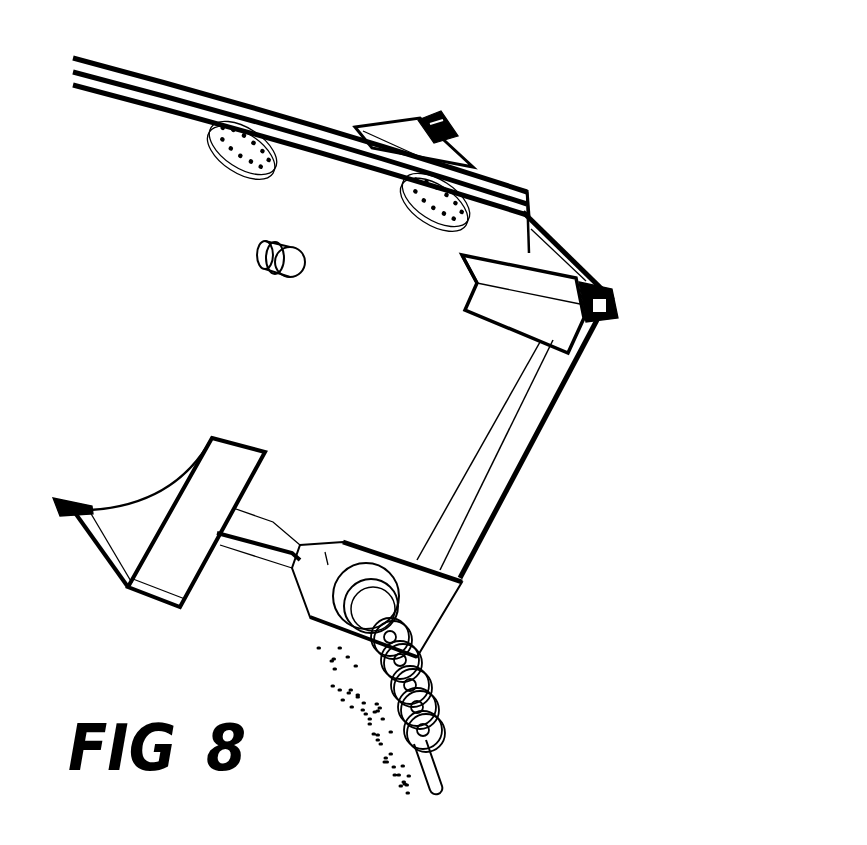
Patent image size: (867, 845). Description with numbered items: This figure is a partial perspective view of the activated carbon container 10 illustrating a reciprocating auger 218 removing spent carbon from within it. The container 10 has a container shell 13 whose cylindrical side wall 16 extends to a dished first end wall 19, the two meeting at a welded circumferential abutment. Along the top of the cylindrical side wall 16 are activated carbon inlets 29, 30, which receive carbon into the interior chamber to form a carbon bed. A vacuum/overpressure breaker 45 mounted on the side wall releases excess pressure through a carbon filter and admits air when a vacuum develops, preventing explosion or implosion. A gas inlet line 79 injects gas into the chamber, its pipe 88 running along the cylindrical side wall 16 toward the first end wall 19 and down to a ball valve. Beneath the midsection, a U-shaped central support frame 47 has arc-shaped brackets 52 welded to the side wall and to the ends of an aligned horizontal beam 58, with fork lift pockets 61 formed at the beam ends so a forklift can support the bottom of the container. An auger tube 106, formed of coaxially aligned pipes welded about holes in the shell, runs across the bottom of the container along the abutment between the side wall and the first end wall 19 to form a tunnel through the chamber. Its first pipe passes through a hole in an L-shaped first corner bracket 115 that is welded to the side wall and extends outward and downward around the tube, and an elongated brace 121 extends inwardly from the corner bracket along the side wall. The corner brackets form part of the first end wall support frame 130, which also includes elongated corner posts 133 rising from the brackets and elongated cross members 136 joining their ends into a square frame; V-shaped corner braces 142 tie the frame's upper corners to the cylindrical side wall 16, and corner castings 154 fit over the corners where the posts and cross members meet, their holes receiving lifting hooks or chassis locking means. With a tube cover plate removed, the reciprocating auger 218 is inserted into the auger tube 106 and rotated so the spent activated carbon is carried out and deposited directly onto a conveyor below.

The container 10 is at (740, 285).
The container shell 13 is at (238, 98).
The cylindrical side wall 16 is at (212, 343).
The first end wall 19 is at (528, 215).
The activated carbon inlet 29 is at (270, 174).
The activated carbon inlet 30 is at (437, 222).
The vacuum/overpressure breaker 45 is at (297, 276).
The first U-shaped central support frame 47 is at (207, 572).
The arc-shaped bracket 52 is at (212, 538).
The horizontal beam 58 is at (106, 566).
The fork lift pocket 61 is at (160, 607).
The gas inlet line 79 is at (390, 180).
The pipe 88 is at (193, 118).
The auger tube 106 is at (428, 592).
The first corner bracket 115 is at (335, 540).
The elongated brace 121 is at (270, 522).
The first end wall support frame 130 is at (548, 430).
The elongated corner post 133 is at (512, 484).
The elongated cross member 136 is at (556, 228).
The V-shaped corner brace 142 is at (366, 124).
The corner casting 154 is at (428, 116).
The reciprocating auger 218 is at (437, 730).